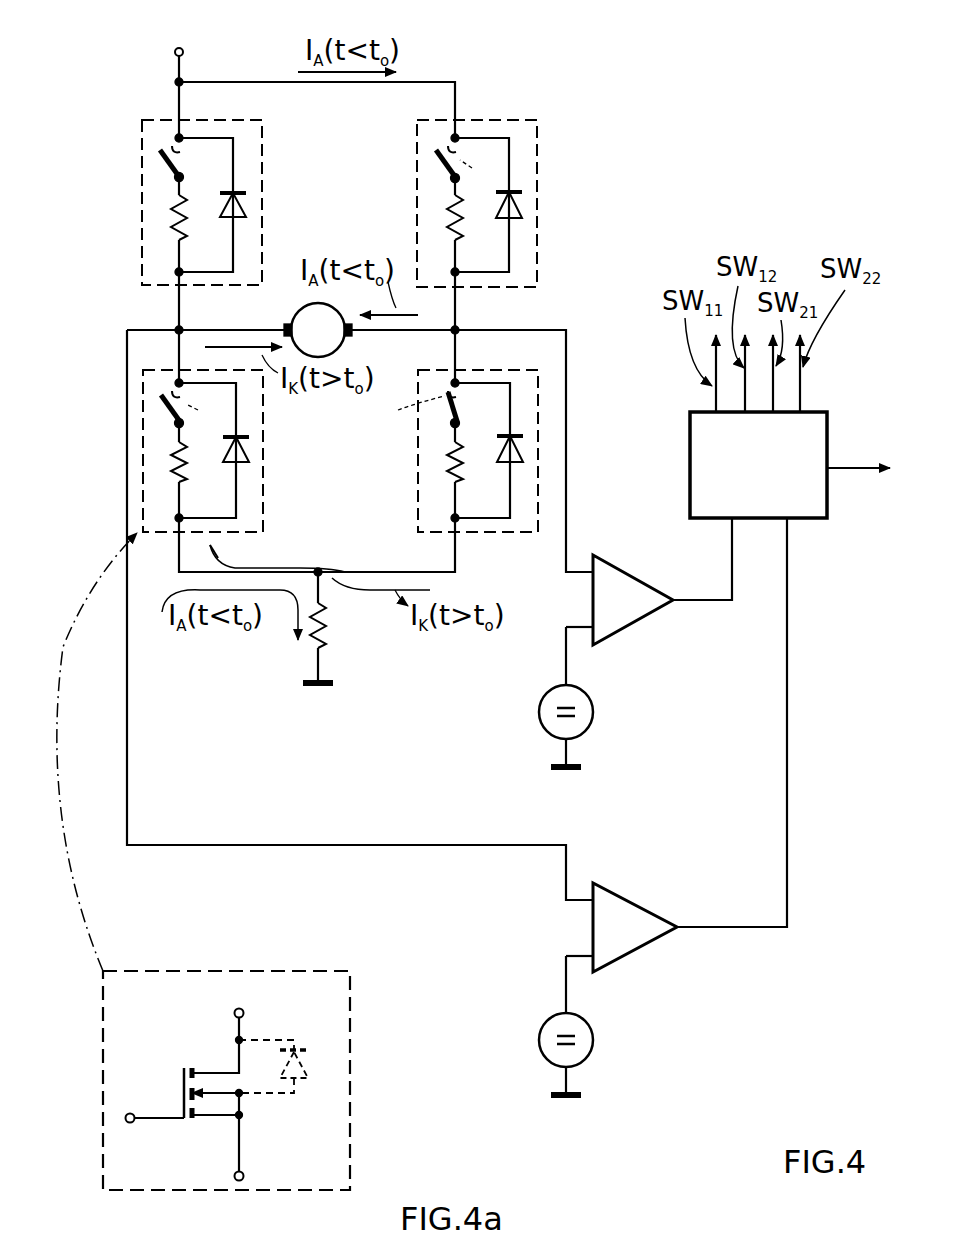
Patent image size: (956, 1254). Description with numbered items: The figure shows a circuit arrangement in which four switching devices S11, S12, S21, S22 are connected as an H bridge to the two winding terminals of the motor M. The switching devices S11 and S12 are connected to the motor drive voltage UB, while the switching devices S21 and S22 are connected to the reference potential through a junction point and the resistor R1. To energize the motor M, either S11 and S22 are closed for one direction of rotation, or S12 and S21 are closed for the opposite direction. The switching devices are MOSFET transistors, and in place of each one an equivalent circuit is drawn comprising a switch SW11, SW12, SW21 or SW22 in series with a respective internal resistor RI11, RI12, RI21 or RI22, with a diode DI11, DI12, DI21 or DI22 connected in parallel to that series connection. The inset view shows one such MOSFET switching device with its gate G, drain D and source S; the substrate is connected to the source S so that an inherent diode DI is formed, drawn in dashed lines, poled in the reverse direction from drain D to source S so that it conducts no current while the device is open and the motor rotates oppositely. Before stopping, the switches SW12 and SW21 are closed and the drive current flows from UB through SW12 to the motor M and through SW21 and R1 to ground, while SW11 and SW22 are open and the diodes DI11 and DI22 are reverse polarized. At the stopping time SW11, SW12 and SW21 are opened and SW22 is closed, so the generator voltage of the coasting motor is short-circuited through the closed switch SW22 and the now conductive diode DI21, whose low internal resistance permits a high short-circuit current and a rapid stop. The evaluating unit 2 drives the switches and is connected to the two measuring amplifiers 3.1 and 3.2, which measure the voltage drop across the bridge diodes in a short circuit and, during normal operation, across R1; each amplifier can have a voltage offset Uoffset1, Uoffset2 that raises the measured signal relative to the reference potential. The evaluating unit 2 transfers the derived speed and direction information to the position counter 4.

In FIG. 4, the motor drive voltage UB is at (165, 62).
In FIG. 4, the switching device S11 is at (142, 128).
In FIG. 4, the switching device S12 is at (540, 132).
In FIG. 4, the switching device S21 is at (142, 392).
In FIG. 4, the switching device S22 is at (540, 380).
In FIG. 4, the switch SW11 is at (165, 165).
In FIG. 4, the switch SW12 is at (440, 162).
In FIG. 4, the switch SW21 is at (168, 420).
In FIG. 4, the switch SW22 is at (448, 425).
In FIG. 4, the internal resistor RI11 is at (172, 230).
In FIG. 4, the internal resistor RI12 is at (462, 233).
In FIG. 4, the internal resistor RI21 is at (175, 482).
In FIG. 4, the internal resistor RI22 is at (465, 475).
In FIG. 4, the diode DI11 is at (250, 208).
In FIG. 4, the diode DI12 is at (525, 205).
In FIG. 4, the diode DI21 is at (252, 455).
In FIG. 4, the diode DI22 is at (525, 452).
In FIG. 4, the motor M is at (318, 330).
In FIG. 4, the resistor R1 is at (328, 628).
In FIG. 4, the evaluating unit 2 is at (688, 490).
In FIG. 4, the measuring amplifier 3.1 is at (632, 655).
In FIG. 4, the measuring amplifier 3.2 is at (634, 908).
In FIG. 4, the position counter 4 is at (862, 478).
In FIG. 4, the voltage offset Uoffset1 is at (610, 685).
In FIG. 4, the voltage offset Uoffset2 is at (610, 1010).
In FIG. 4A, the drain D is at (236, 1008).
In FIG. 4A, the gate G is at (122, 1098).
In FIG. 4A, the source S is at (236, 1182).
In FIG. 4A, the inherent diode DI is at (318, 1062).